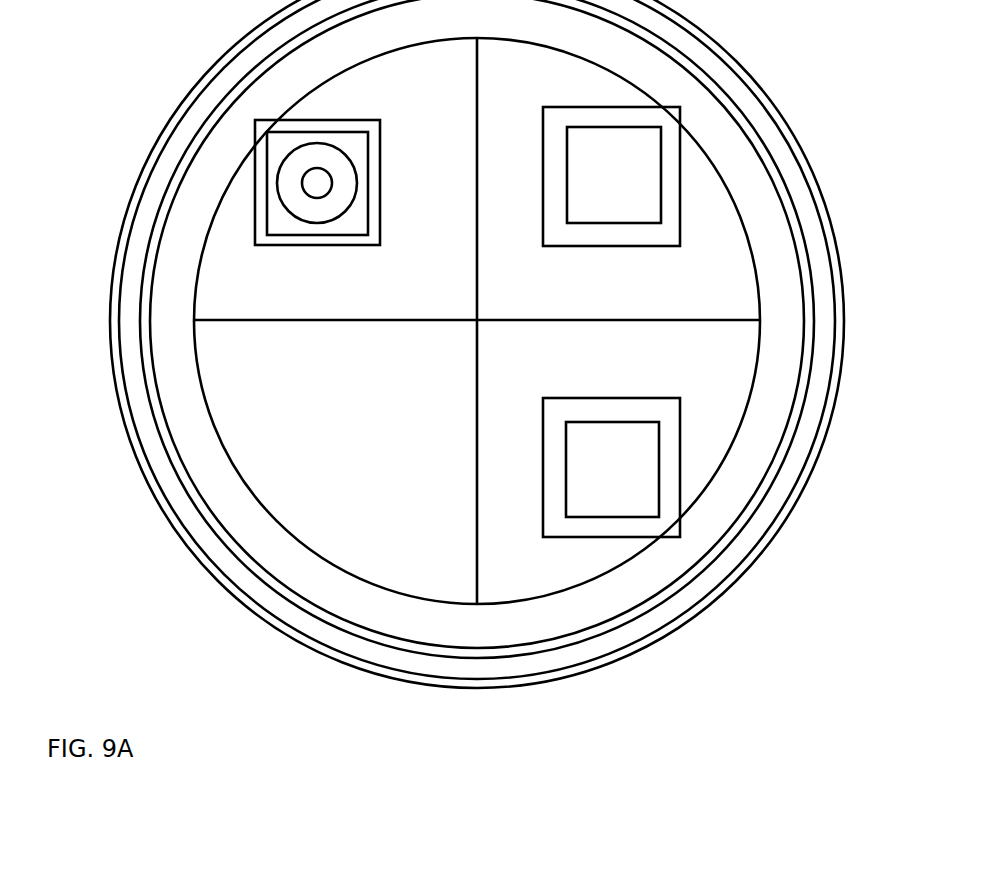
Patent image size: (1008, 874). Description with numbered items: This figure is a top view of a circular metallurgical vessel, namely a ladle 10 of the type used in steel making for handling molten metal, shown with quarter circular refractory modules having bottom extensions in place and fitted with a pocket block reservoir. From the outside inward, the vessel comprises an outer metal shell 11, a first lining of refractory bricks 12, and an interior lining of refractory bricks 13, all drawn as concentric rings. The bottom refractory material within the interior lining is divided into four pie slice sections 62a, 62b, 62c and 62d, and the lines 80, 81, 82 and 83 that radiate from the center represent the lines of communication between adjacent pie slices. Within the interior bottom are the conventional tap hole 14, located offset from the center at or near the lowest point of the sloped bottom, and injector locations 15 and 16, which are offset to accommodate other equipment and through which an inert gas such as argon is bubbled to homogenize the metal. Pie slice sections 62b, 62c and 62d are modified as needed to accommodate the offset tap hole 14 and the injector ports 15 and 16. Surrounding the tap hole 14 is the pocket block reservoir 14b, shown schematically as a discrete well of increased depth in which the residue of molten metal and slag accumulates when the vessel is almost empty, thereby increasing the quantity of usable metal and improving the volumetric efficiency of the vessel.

The ladle 10 is at (132, 531).
The outer metal shell 11 is at (208, 577).
The first lining of refractory bricks 12 is at (303, 628).
The interior lining of refractory bricks 13 is at (445, 637).
The tap hole 14 is at (322, 183).
The pocket block reservoir 14b is at (372, 148).
The injector location 15 is at (585, 172).
The injector location 16 is at (587, 452).
The pie slice section 62a is at (422, 349).
The pie slice section 62b is at (423, 294).
The pie slice section 62c is at (527, 294).
The pie slice section 62d is at (528, 349).
The line of communication 80 is at (317, 320).
The line of communication 81 is at (477, 90).
The line of communication 82 is at (733, 320).
The line of communication 83 is at (475, 490).